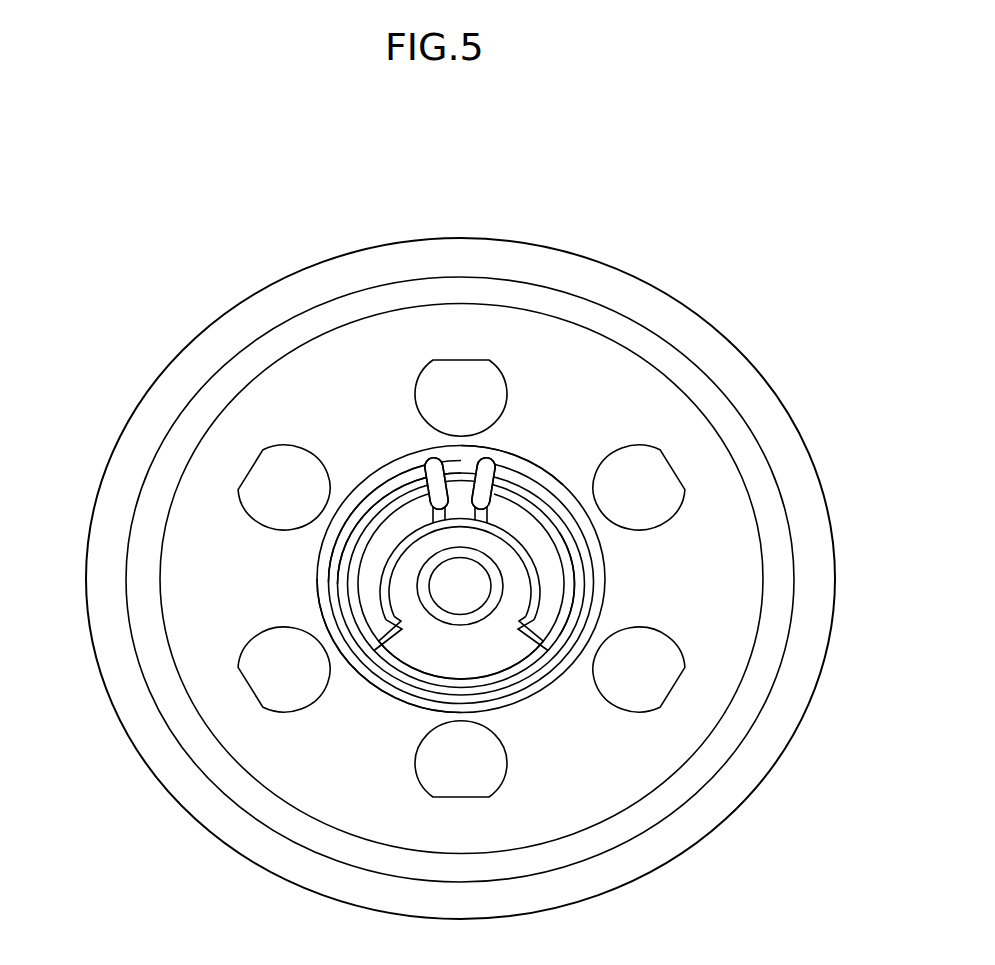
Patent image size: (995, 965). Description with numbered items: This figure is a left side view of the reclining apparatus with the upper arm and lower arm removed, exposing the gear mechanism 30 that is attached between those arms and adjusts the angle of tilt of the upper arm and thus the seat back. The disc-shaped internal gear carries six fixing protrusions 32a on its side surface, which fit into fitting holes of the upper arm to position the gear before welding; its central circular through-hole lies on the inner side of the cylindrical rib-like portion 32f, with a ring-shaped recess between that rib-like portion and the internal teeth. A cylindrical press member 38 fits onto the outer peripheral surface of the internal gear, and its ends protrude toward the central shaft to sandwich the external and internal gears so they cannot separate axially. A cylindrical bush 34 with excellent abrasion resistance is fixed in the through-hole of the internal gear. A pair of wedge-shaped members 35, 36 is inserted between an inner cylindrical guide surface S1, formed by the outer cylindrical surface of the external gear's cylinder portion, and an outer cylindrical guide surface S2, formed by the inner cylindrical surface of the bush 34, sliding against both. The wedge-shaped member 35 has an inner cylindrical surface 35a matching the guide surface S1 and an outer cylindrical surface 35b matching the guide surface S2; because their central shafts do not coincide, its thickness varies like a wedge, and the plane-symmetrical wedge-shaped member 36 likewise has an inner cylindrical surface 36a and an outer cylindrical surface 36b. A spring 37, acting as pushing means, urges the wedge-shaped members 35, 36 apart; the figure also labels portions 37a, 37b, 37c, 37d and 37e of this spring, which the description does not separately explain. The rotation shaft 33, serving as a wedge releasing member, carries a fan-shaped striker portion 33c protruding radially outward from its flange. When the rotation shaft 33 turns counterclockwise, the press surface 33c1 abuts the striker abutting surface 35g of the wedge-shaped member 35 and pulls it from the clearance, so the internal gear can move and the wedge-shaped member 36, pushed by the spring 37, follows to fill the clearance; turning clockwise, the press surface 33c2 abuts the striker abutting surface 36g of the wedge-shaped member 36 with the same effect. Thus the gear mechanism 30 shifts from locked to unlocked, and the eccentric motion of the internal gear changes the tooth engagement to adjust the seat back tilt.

The gear mechanism 30 is at (742, 330).
The fixing protrusions 32a is at (257, 500).
The cylindrical rib-like portion 32f is at (473, 458).
The rotation shaft 33 is at (505, 607).
The striker portion 33c is at (435, 670).
The press surface 33c1 is at (527, 630).
The press surface 33c2 is at (382, 630).
The bush 34 is at (398, 525).
The wedge-shaped member 35 is at (553, 553).
The inner cylindrical surface 35a is at (530, 550).
The outer cylindrical surface 35b is at (567, 583).
The striker abutting surface 35g is at (537, 640).
The wedge-shaped member 36 is at (392, 535).
The inner cylindrical surface 36a is at (383, 570).
The outer cylindrical surface 36b is at (383, 578).
The striker abutting surface 36g is at (378, 640).
The spring 37 is at (405, 692).
The leg portion 37a is at (602, 612).
The right lug 37b is at (492, 458).
The lug edge 37c is at (431, 458).
The lug edge 37d is at (508, 460).
The left lug 37e is at (422, 456).
The press member 38 is at (740, 372).
The inner cylindrical guide surface S1 is at (381, 578).
The outer cylindrical guide surface S2 is at (595, 598).